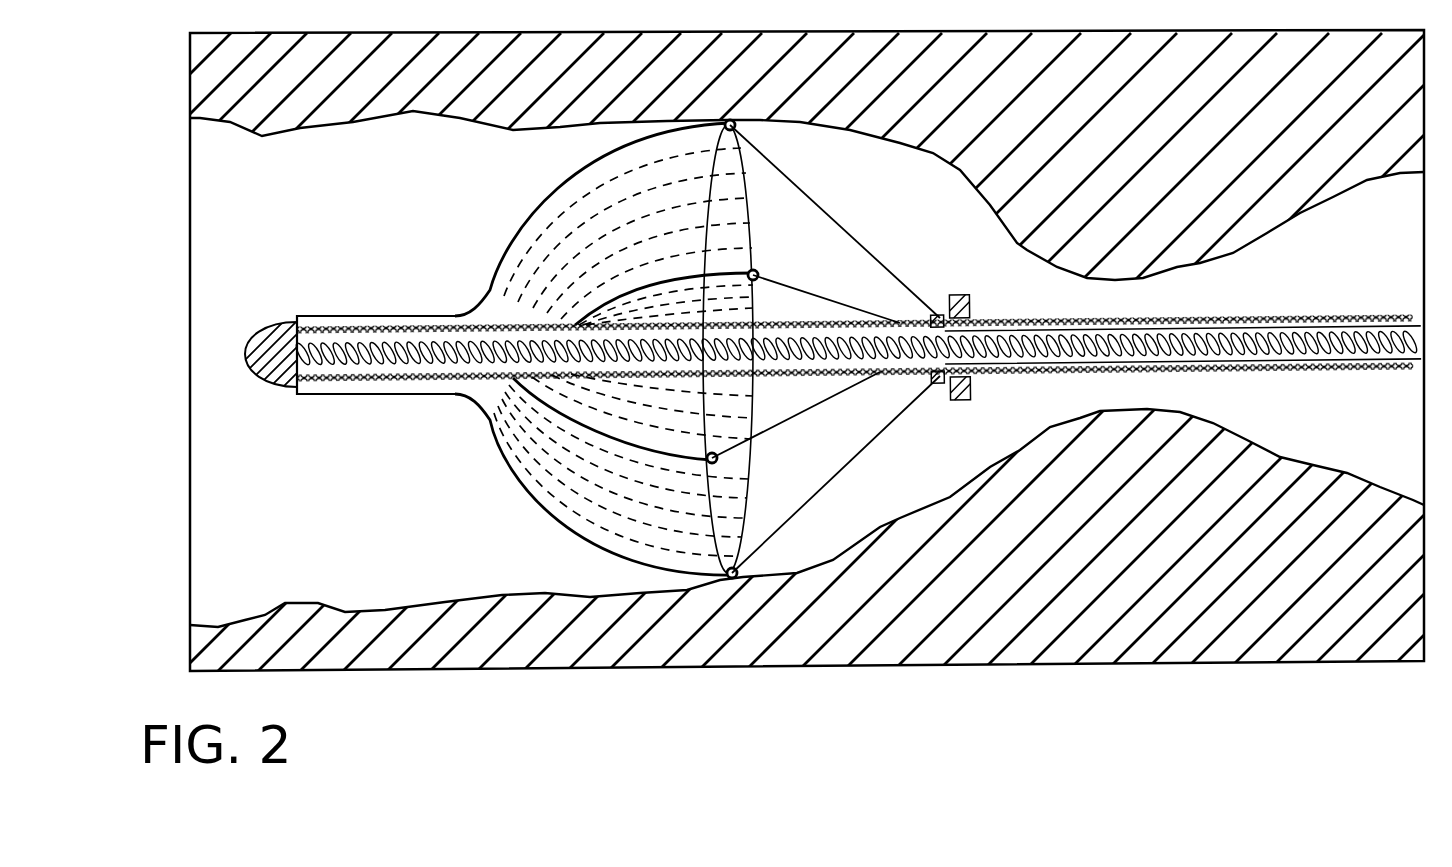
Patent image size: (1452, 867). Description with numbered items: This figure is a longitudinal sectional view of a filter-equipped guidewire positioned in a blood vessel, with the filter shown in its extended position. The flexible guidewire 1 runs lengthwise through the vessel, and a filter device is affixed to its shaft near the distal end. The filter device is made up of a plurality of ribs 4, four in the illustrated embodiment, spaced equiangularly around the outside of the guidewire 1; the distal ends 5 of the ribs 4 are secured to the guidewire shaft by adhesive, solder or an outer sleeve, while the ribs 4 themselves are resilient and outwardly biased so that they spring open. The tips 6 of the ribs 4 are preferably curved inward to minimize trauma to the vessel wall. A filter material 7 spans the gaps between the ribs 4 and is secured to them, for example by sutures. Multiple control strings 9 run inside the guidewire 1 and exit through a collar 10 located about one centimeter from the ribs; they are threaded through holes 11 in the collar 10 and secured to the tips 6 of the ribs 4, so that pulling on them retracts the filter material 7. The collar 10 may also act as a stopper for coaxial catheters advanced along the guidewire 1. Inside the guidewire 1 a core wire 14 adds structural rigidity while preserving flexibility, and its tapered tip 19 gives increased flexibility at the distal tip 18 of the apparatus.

The guidewire 1 is at (1268, 318).
The ribs 4 is at (543, 197).
The distal ends of the ribs 5 is at (367, 320).
The tips of the ribs 6 is at (733, 580).
The filter material 7 is at (553, 265).
The control strings 9 is at (853, 232).
The collar 10 is at (975, 385).
The holes 11 is at (968, 303).
The core wire 14 is at (1325, 335).
The distal tip 18 is at (245, 373).
The tapered tip 19 is at (245, 348).